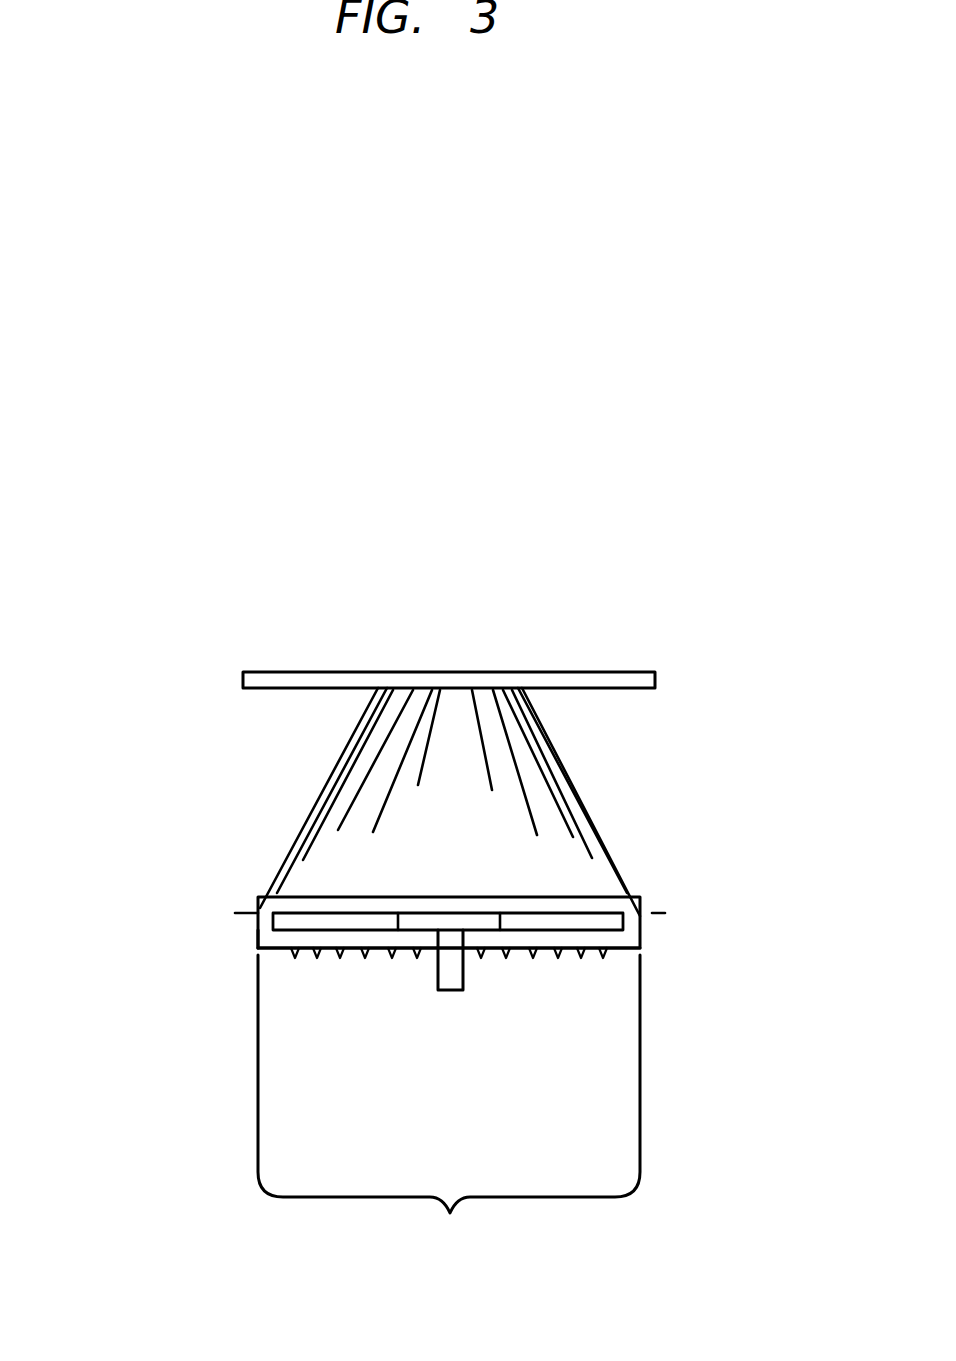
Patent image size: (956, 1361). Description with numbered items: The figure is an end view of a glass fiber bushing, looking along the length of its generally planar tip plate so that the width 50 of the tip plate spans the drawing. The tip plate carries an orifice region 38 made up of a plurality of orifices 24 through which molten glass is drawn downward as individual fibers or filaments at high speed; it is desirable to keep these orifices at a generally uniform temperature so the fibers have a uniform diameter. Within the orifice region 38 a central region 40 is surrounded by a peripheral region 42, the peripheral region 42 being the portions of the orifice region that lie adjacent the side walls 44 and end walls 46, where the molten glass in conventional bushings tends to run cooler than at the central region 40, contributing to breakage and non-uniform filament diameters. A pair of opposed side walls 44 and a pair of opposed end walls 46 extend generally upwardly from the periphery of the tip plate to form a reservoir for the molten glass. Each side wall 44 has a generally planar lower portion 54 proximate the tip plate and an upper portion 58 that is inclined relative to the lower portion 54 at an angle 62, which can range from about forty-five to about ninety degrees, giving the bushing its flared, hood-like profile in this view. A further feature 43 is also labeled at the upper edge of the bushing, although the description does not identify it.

The orifices 24 is at (420, 957).
The orifice region 38 is at (583, 957).
The central region 40 is at (507, 957).
The peripheral region 42 is at (292, 957).
The upper housing edge 43 is at (250, 913).
The side walls 44 is at (257, 930).
The end walls 46 is at (553, 905).
The width 50 is at (450, 1213).
The lower portion 54 is at (257, 935).
The upper portion 58 is at (315, 807).
The angle 62 is at (630, 893).